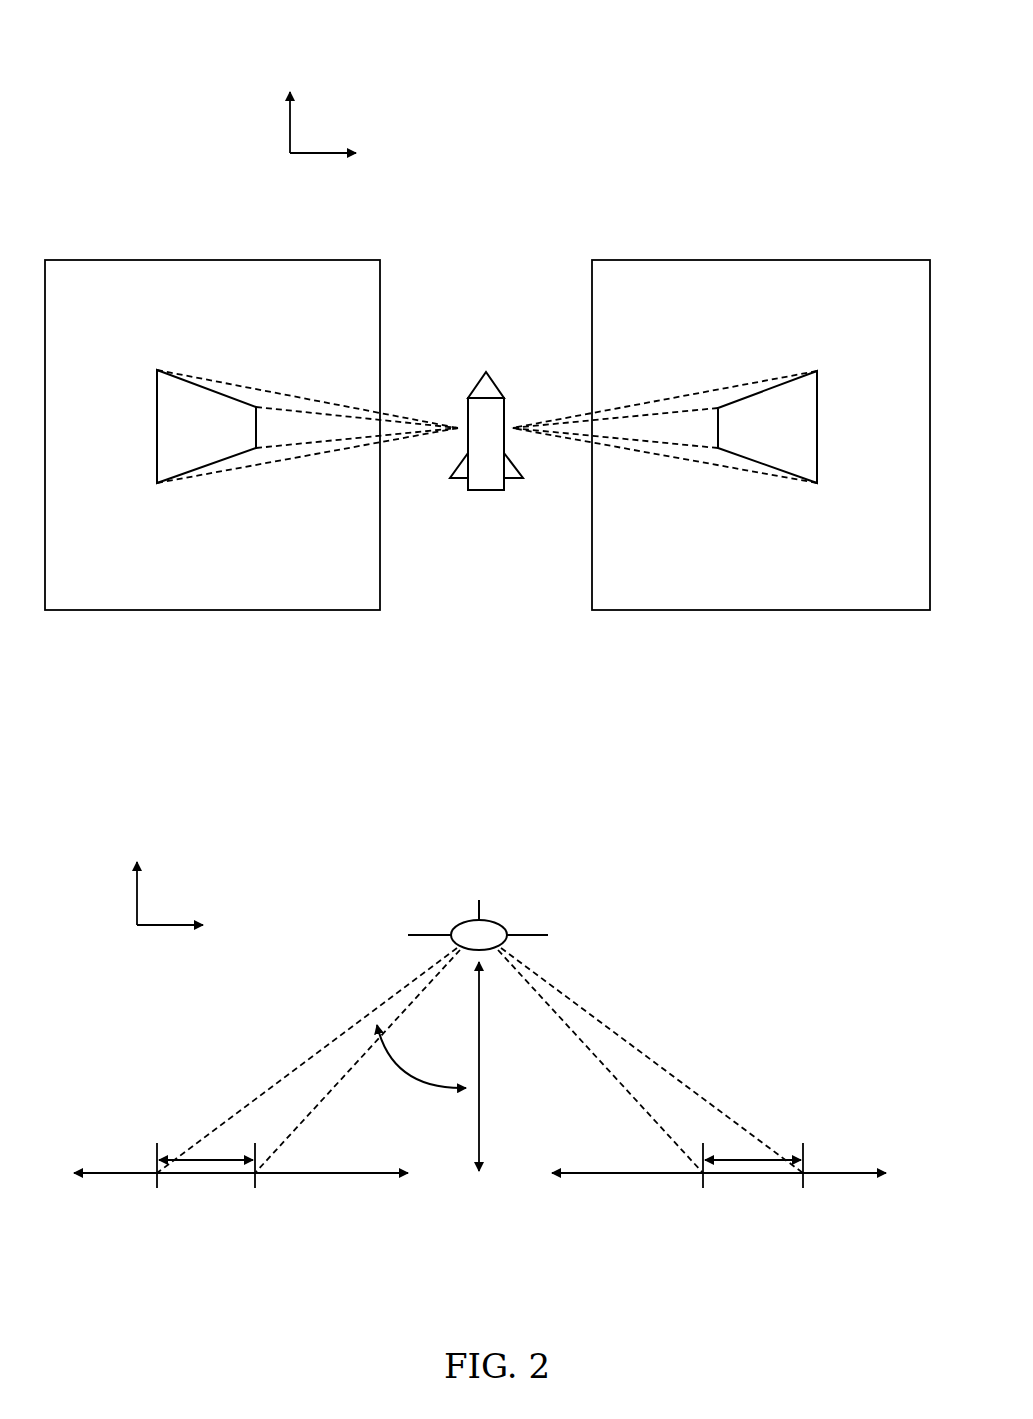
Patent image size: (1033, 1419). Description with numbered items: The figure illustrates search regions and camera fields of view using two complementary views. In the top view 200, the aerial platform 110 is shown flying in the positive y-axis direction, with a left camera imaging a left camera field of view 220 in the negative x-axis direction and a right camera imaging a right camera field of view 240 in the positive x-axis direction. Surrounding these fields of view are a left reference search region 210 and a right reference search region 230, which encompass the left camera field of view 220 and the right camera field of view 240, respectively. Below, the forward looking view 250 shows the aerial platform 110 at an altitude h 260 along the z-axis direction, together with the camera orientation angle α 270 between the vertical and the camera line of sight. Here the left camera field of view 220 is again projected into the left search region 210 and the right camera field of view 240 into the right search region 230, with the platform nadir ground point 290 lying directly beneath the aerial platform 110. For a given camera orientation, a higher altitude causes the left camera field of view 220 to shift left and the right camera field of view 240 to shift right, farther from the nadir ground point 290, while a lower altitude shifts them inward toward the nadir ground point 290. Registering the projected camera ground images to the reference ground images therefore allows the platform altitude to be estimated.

The top view 200 is at (466, 46).
The left reference search region 210 is at (57, 1206).
The left camera field of view 220 is at (211, 446).
The right reference search region 230 is at (906, 1208).
The right camera field of view 240 is at (764, 446).
The aerial platform 110 is at (480, 336).
The forward looking view 250 is at (464, 825).
The altitude h 260 is at (492, 1101).
The camera orientation angle α 270 is at (379, 1128).
The platform nadir ground point 290 is at (463, 1243).